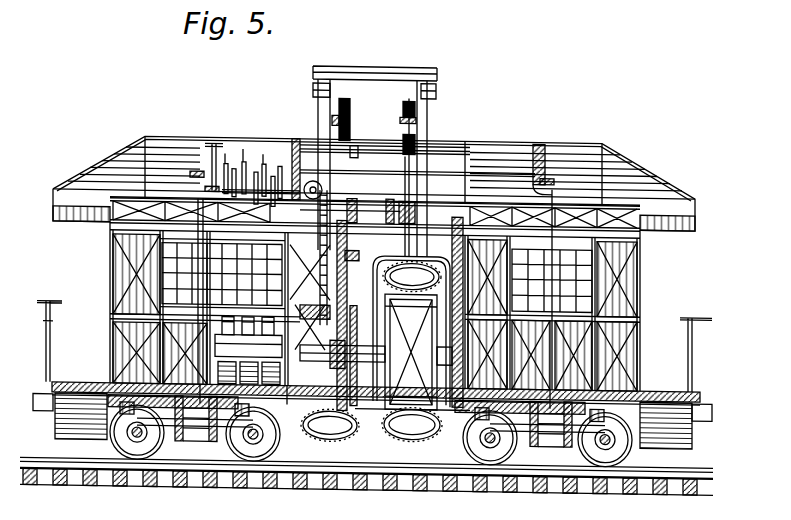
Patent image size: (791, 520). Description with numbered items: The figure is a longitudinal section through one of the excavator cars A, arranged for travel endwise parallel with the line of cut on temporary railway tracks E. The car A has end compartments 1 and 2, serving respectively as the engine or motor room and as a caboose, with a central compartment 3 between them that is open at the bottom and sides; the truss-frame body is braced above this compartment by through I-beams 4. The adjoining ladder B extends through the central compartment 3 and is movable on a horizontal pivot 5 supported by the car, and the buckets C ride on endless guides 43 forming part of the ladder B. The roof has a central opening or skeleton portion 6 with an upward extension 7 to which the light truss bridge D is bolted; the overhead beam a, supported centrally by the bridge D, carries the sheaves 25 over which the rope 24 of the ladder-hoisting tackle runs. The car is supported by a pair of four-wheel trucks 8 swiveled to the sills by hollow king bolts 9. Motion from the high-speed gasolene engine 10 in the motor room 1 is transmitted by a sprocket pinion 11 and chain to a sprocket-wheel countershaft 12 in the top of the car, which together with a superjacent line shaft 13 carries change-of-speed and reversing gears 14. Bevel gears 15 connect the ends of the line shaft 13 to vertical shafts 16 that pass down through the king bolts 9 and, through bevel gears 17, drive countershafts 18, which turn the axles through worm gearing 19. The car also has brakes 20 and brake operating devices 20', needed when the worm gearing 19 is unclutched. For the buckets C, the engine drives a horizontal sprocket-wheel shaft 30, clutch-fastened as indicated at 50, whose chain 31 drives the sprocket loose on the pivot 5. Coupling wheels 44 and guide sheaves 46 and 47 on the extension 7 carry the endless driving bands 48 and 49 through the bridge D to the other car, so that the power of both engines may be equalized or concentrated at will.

The end compartment (engine or motor room) 1 is at (205, 308).
The end compartment (caboose) 2 is at (504, 312).
The central compartment 3 is at (412, 409).
The through I-beams 4 is at (378, 198).
The horizontal pivot 5 is at (356, 370).
The central opening or skeleton portion 6 is at (455, 140).
The upward extension 7 is at (416, 102).
The four-wheel trucks 8 is at (346, 433).
The hollow king bolts 9 is at (198, 372).
The gasolene engine 10 is at (248, 350).
The sprocket pinion 11 is at (307, 298).
The sprocket-wheel countershaft 12 is at (313, 176).
The line shaft 13 is at (417, 165).
The change-of-speed gears and reversing gears 14 is at (243, 158).
The bevel gears 15 is at (208, 154).
The vertical shafts 16 is at (552, 322).
The bevel gears 17 is at (575, 375).
The countershafts 18 is at (318, 296).
The worm gearing 19 is at (130, 424).
The brakes 20 is at (416, 387).
The brake operating devices 20' is at (61, 340).
The rope 24 is at (317, 102).
The sheaves 25 is at (314, 84).
The horizontal sprocket-wheel shaft 30 is at (436, 212).
The chain 31 is at (352, 245).
The endless guides 43 is at (406, 183).
The coupling wheels 44 is at (350, 200).
The guide sheaves 46 is at (348, 130).
The guide sheaves 47 is at (401, 110).
The endless wire rope or driving band 48 is at (334, 117).
The endless wire rope or driving band 49 is at (405, 176).
The clutch 50 is at (385, 154).
The overhead beam a is at (375, 67).
The car A is at (374, 247).
The ladder B is at (411, 352).
The buckets C is at (371, 424).
The upper cylinder C' is at (412, 276).
The truss bridge D is at (378, 155).
The temporary railway tracks E is at (58, 457).